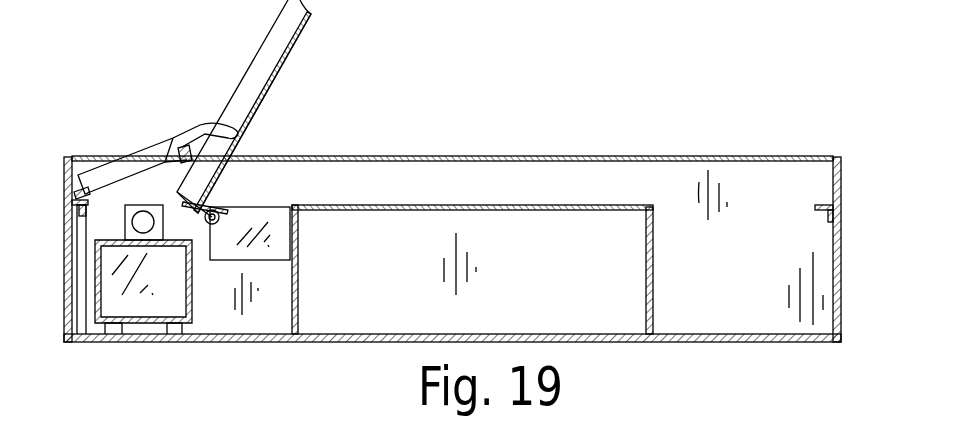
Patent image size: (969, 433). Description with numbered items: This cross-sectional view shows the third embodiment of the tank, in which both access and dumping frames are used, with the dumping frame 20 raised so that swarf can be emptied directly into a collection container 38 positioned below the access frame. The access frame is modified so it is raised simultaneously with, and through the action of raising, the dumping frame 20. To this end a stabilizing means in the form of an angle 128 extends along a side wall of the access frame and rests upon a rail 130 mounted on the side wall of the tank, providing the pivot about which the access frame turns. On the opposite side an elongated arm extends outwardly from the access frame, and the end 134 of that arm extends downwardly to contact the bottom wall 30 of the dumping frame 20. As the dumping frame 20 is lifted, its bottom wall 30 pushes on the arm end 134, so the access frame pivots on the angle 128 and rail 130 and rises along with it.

The dumping frame 20 is at (289, 63).
The bottom wall 30 is at (263, 87).
The collection container 38 is at (193, 307).
The angle 128 is at (70, 186).
The rail 130 is at (90, 224).
The end of the arm 134 is at (197, 124).